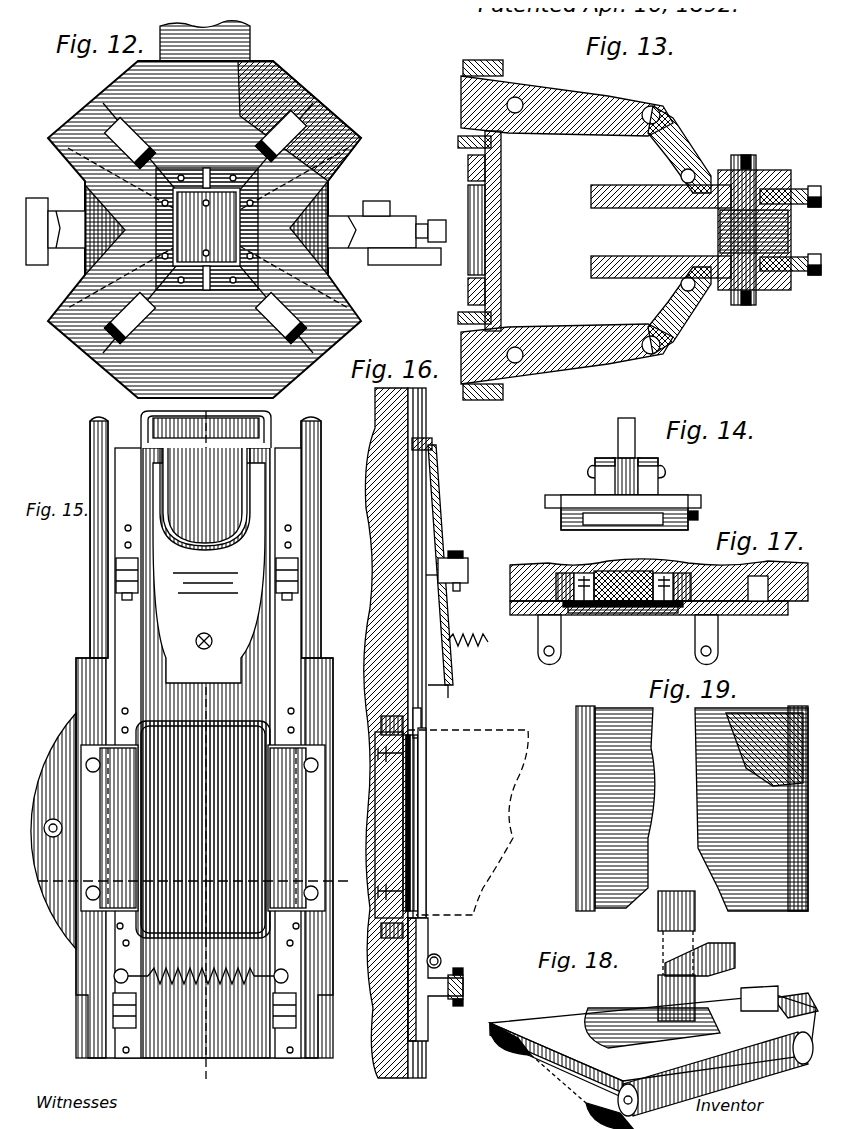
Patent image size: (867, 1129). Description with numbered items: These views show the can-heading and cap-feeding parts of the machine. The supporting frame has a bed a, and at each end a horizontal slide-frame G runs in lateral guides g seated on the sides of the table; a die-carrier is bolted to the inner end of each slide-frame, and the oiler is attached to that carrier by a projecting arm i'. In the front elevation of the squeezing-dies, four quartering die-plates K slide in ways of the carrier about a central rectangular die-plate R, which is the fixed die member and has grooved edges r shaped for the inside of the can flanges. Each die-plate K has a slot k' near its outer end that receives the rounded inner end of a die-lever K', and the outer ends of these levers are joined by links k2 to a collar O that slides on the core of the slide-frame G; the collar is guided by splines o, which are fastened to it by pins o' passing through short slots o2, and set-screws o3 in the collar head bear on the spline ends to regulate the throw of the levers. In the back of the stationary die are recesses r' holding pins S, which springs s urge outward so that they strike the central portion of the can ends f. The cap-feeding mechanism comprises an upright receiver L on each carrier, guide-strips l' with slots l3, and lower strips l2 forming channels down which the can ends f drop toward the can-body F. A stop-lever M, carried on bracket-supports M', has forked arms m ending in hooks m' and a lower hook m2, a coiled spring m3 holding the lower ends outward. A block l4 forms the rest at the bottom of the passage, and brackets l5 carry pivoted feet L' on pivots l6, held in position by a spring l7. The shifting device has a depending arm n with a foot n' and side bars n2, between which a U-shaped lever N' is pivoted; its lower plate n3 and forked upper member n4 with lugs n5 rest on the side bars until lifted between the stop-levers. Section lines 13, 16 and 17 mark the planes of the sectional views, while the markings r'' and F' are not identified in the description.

In FIG. 12, the upright receiver L is at (260, 100).
In FIG. 12, the section line 13 13 is at (290, 105).
In FIG. 12, the quartering die-plates K is at (206, 230).
In FIG. 14, the quartering die-plates K is at (623, 525).
In FIG. 12, the slot k' is at (264, 189).
In FIG. 13, the slot k' is at (462, 229).
In FIG. 12, the die-lever K' is at (339, 222).
In FIG. 13, the die-lever K' is at (555, 230).
In FIG. 14, the die-lever K' is at (634, 453).
In FIG. 12, the rectangular die-plate R is at (150, 200).
In FIG. 13, the rectangular die-plate R is at (493, 205).
In FIG. 16, the rectangular die-plate R is at (380, 795).
In FIG. 12, the lateral guides g is at (42, 215).
In FIG. 12, the slide-frame G is at (62, 240).
In FIG. 12, the bed a is at (410, 255).
In FIG. 12, the projecting arm i' is at (238, 269).
In FIG. 12, the section line 16 16 is at (209, 404).
In FIG. 15, the section line 16 16 is at (206, 761).
In FIG. 13, the links k2 is at (670, 118).
In FIG. 13, the collar O is at (745, 165).
In FIG. 13, the ribs or splines o is at (661, 231).
In FIG. 14, the ribs or splines o is at (628, 476).
In FIG. 13, the short slots o2 is at (680, 200).
In FIG. 13, the pins or bolts o' is at (717, 223).
In FIG. 13, the set-screws o3 is at (808, 247).
In FIG. 13, the recesses r' is at (468, 230).
In FIG. 17, the recesses r' is at (545, 574).
In FIG. 17, the guide strip r'' is at (688, 573).
In FIG. 16, the grooved edges r is at (420, 821).
In FIG. 16, the slots l3 is at (418, 438).
In FIG. 16, the hook or projection m' is at (440, 437).
In FIG. 15, the hook or projection m' is at (214, 461).
In FIG. 16, the fork arm m is at (452, 458).
In FIG. 15, the fork arm m is at (215, 483).
In FIG. 16, the lever M is at (455, 565).
In FIG. 15, the lever M is at (150, 565).
In FIG. 16, the bracket-supports M' is at (465, 568).
In FIG. 15, the bracket-supports M' is at (196, 576).
In FIG. 16, the coiled spring m3 is at (478, 636).
In FIG. 15, the coiled spring m3 is at (200, 630).
In FIG. 16, the hook or projection m2 is at (440, 683).
In FIG. 17, the can ends f is at (640, 605).
In FIG. 19, the can ends f is at (568, 826).
In FIG. 16, the can ends f is at (412, 728).
In FIG. 15, the can ends f is at (175, 745).
In FIG. 17, the heads or pins S is at (605, 605).
In FIG. 16, the heads or pins S is at (403, 790).
In FIG. 17, the lower guide-strips l2 is at (552, 610).
In FIG. 16, the lower guide-strips l2 is at (412, 840).
In FIG. 15, the lower guide-strips l2 is at (82, 780).
In FIG. 16, the can-body F is at (468, 822).
In FIG. 19, the carrier recess F' is at (707, 775).
In FIG. 17, the block l4 is at (755, 607).
In FIG. 16, the block l4 is at (405, 948).
In FIG. 16, the spring l7 is at (434, 950).
In FIG. 15, the spring l7 is at (265, 985).
In FIG. 16, the pivot l6 is at (440, 967).
In FIG. 15, the pivot l6 is at (106, 968).
In FIG. 16, the foot or support L' is at (453, 979).
In FIG. 15, the foot or support L' is at (201, 964).
In FIG. 16, the right-angled bracket l5 is at (445, 1000).
In FIG. 15, the guide-strips l' is at (182, 737).
In FIG. 15, the section line 17 17 is at (191, 881).
In FIG. 17, the springs s is at (576, 566).
In FIG. 16, the springs s is at (368, 745).
In FIG. 18, the depending arm n is at (670, 968).
In FIG. 18, the projecting lug n5 is at (700, 940).
In FIG. 18, the upper member n4 is at (650, 975).
In FIG. 18, the U-shaped lever N' is at (653, 1062).
In FIG. 18, the foot n' is at (750, 996).
In FIG. 18, the side bars n2 is at (580, 1110).
In FIG. 18, the lower member n3 is at (770, 1052).